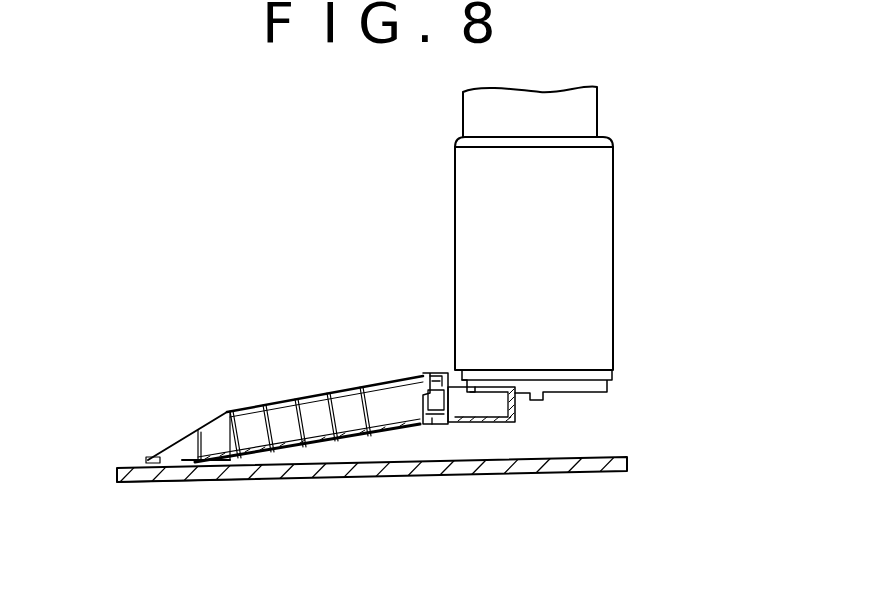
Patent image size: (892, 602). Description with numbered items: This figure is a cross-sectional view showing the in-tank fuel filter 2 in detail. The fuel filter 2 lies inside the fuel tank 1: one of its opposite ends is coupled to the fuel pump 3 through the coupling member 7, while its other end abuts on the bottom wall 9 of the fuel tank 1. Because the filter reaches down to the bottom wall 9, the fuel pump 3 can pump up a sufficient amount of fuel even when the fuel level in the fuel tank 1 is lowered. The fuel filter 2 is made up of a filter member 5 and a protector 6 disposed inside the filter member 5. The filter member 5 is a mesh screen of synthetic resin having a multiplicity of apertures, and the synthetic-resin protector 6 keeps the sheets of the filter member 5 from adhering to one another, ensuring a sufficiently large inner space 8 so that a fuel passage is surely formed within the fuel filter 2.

The fuel tank 1 is at (332, 478).
The fuel filter 2 is at (380, 373).
The fuel pump 3 is at (580, 210).
The filter member 5 is at (163, 452).
The protector 6 is at (218, 438).
The coupling member 7 is at (485, 432).
The inner space 8 is at (340, 406).
The bottom wall 9 is at (207, 470).